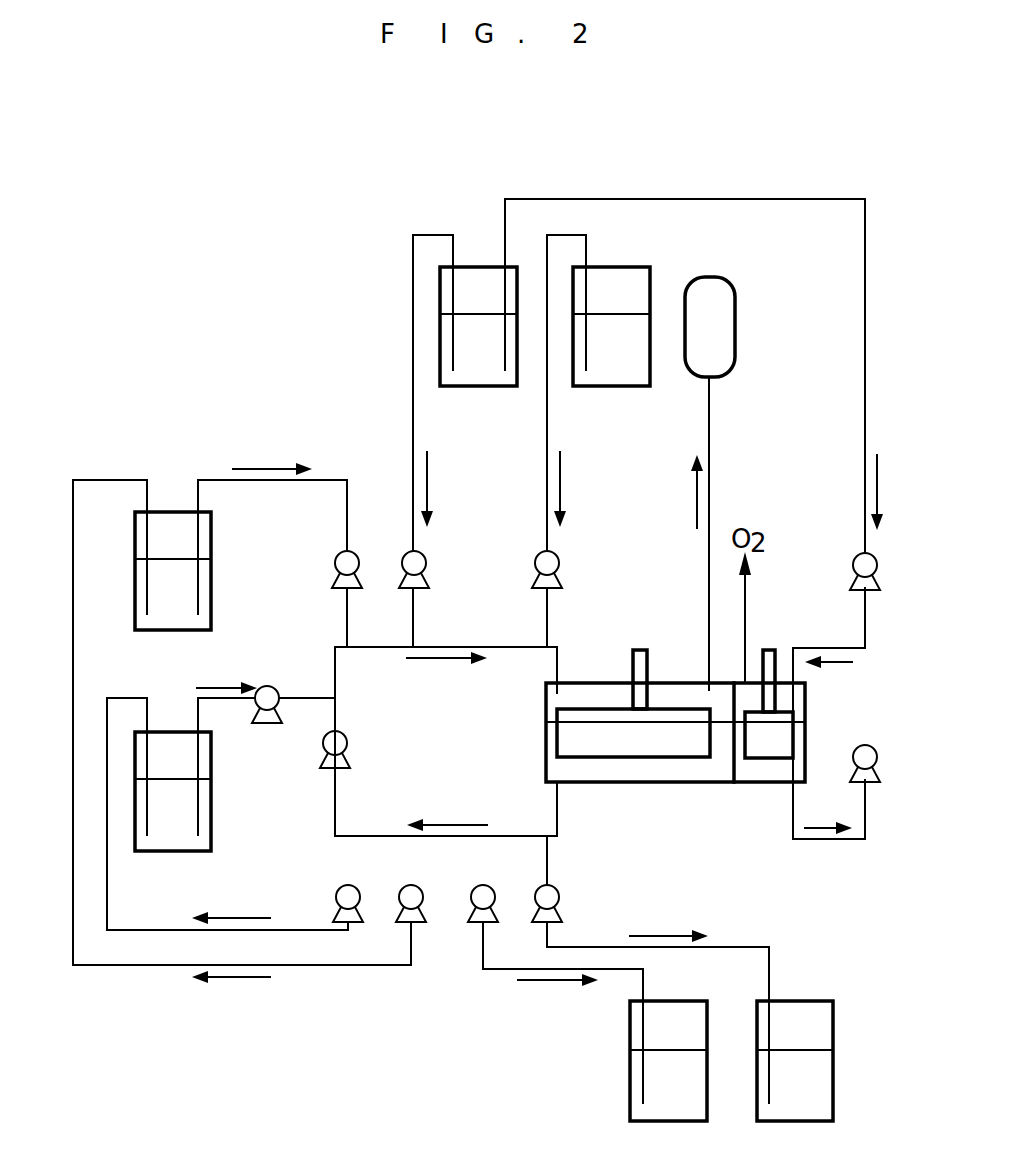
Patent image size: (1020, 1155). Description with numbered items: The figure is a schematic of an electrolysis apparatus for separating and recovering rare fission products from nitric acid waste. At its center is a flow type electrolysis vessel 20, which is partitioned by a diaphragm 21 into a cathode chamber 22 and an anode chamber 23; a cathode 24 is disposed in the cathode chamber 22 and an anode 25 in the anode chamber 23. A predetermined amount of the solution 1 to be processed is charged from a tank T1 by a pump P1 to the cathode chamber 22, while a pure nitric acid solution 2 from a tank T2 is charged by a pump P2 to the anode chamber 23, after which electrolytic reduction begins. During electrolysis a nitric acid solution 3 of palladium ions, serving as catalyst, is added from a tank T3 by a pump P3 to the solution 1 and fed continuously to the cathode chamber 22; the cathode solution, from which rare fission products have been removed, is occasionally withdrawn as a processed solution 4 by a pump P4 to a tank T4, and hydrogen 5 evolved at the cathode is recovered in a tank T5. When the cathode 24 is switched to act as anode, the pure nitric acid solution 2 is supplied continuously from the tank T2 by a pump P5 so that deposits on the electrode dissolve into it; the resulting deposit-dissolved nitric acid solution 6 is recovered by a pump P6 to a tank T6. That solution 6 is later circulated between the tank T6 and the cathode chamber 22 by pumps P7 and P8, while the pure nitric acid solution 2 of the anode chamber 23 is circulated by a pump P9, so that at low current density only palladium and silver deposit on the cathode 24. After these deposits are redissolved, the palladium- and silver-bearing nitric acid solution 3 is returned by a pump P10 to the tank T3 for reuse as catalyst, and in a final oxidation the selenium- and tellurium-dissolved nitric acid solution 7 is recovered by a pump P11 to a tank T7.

The solution to be processed 1 is at (548, 420).
The pure nitric acid solution 2 is at (415, 418).
The nitric acid solution of Pd2+ 3 is at (345, 478).
The processed solution 4 is at (551, 857).
The hydrogen 5 is at (708, 588).
The deposit-dissolved nitric acid solution 6 is at (337, 670).
The Se, Te-dissolved nitric acid solution 7 is at (483, 955).
The flow type electrolysis vessel 20 is at (660, 786).
The diaphragm 21 is at (733, 762).
The cathode chamber 22 is at (603, 783).
The anode chamber 23 is at (762, 783).
The cathode 24 is at (590, 709).
The anode 25 is at (790, 708).
The tank T1 is at (630, 268).
The tank T2 is at (478, 267).
The tank T3 is at (213, 522).
The tank T4 is at (835, 1092).
The tank T5 is at (735, 282).
The tank T6 is at (213, 765).
The tank T7 is at (630, 1098).
The pump P1 is at (561, 563).
The pump P2 is at (878, 565).
The pump P3 is at (333, 563).
The pump P4 is at (562, 897).
The pump P5 is at (428, 560).
The pump P6 is at (335, 895).
The pump P7 is at (277, 686).
The pump P8 is at (347, 740).
The pump P9 is at (878, 757).
The pump P10 is at (418, 892).
The pump P11 is at (488, 893).